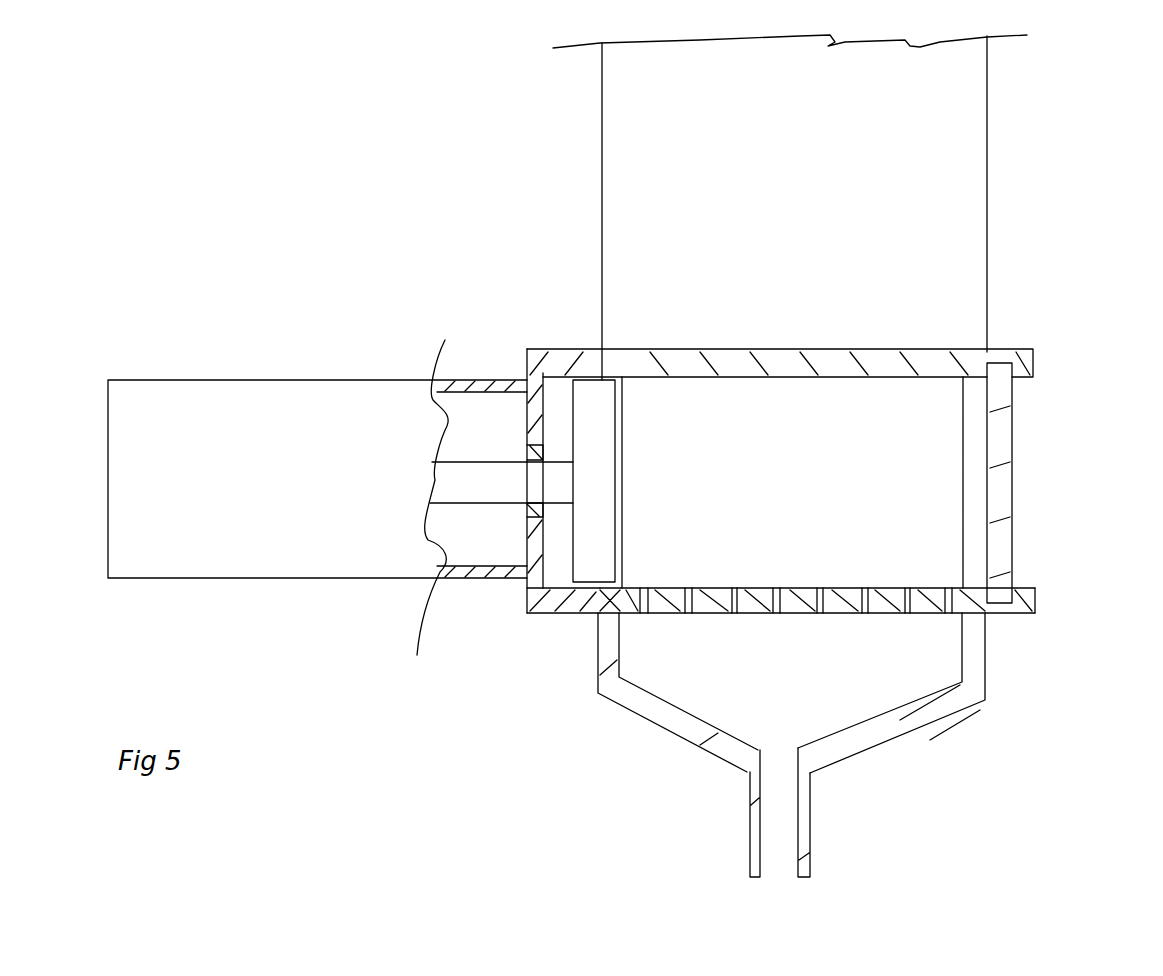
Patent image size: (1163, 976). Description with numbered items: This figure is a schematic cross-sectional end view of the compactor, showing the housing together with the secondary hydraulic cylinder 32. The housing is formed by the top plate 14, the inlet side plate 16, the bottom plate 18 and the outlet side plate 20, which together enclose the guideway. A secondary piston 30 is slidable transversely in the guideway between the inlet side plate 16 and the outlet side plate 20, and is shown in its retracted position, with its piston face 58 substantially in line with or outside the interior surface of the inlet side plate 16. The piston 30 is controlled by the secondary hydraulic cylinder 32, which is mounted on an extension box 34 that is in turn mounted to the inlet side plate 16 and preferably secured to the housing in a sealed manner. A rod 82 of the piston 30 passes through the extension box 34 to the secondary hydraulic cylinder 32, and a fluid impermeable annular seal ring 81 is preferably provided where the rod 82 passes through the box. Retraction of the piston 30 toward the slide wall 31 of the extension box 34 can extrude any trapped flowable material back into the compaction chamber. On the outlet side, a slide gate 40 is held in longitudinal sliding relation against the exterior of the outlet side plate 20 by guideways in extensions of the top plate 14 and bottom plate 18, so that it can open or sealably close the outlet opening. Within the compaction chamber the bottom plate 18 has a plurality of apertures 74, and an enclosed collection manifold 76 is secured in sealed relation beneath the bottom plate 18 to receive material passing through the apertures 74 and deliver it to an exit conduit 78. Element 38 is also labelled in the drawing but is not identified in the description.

The top plate 14 is at (1040, 350).
The inlet side plate 16 is at (624, 396).
The bottom plate 18 is at (1037, 600).
The outlet side plate 20 is at (975, 475).
The secondary piston 30 is at (593, 392).
The slide wall 31 is at (527, 421).
The secondary hydraulic cylinder 32 is at (291, 400).
The extension box 34 is at (534, 612).
The supply conduit 38 is at (990, 155).
The slide gate 40 is at (1013, 393).
The piston face 58 is at (622, 520).
The apertures 74 is at (832, 643).
The collection manifold 76 is at (933, 723).
The exit conduit 78 is at (813, 825).
The annular seal ring 81 is at (527, 458).
The rod 82 is at (479, 490).